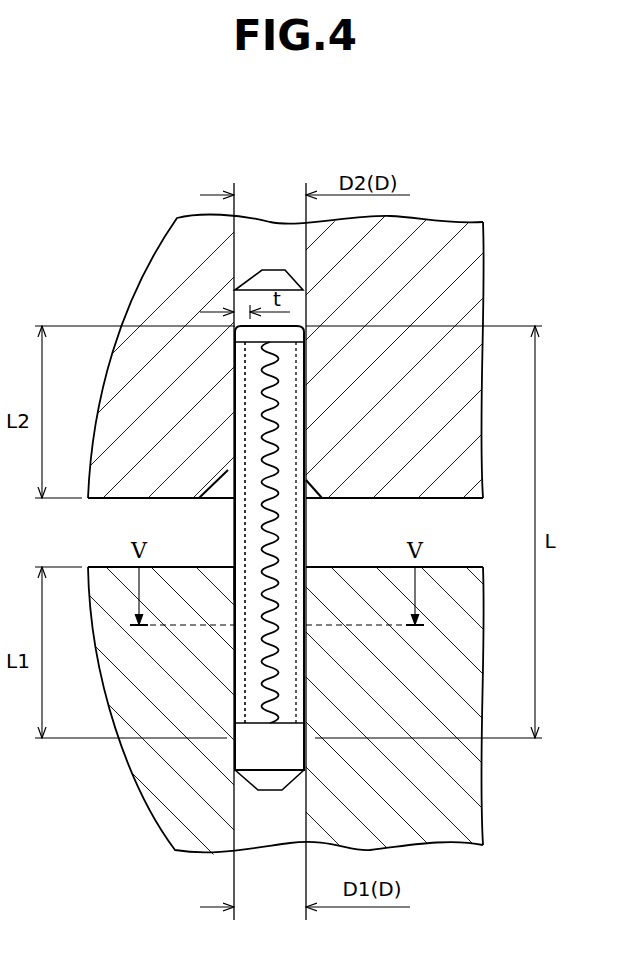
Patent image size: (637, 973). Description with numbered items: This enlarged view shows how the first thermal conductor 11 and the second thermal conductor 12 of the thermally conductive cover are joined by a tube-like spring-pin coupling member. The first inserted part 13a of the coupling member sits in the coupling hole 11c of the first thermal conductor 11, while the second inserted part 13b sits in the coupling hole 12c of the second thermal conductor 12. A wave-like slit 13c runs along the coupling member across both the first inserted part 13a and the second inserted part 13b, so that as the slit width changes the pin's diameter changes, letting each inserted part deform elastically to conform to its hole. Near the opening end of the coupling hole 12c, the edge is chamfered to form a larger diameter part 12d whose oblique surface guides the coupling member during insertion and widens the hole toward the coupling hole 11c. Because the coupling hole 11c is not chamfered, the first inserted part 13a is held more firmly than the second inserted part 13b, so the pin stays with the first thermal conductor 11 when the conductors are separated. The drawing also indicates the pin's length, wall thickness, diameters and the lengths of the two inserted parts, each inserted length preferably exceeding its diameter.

The first thermal conductor 11 is at (150, 805).
The coupling hole 11c is at (243, 575).
The second thermal conductor 12 is at (131, 285).
The coupling hole 12c is at (303, 292).
The larger diameter part 12d is at (312, 490).
The first inserted part 13a is at (292, 670).
The second inserted part 13b is at (292, 410).
The slit 13c is at (258, 392).